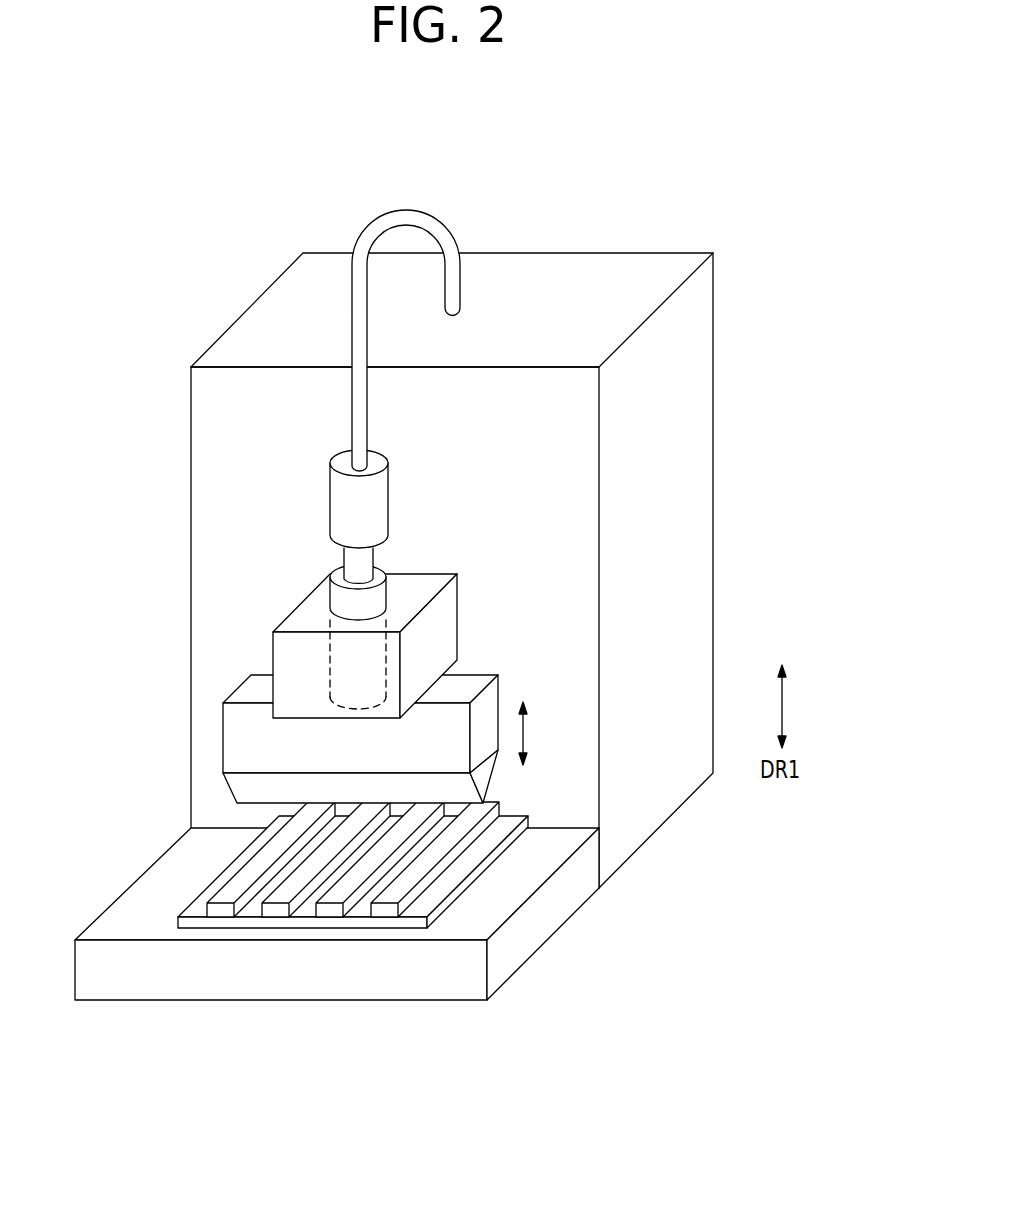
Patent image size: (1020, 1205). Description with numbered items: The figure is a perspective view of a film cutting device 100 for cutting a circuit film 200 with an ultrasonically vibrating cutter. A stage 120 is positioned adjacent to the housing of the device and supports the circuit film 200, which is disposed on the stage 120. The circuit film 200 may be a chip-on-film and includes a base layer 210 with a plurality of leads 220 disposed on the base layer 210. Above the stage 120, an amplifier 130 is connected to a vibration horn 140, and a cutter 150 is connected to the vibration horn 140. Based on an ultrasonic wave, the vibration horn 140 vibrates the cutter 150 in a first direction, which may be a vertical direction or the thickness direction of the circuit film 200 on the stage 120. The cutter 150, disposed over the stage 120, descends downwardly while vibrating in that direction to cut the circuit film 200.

The film cutting device 100 is at (706, 214).
The stage 120 is at (147, 978).
The amplifier 130 is at (338, 503).
The vibration horn 140 is at (340, 653).
The cutter 150 is at (235, 743).
The circuit film 200 is at (353, 954).
The base layer 210 is at (305, 923).
The leads 220 is at (382, 912).